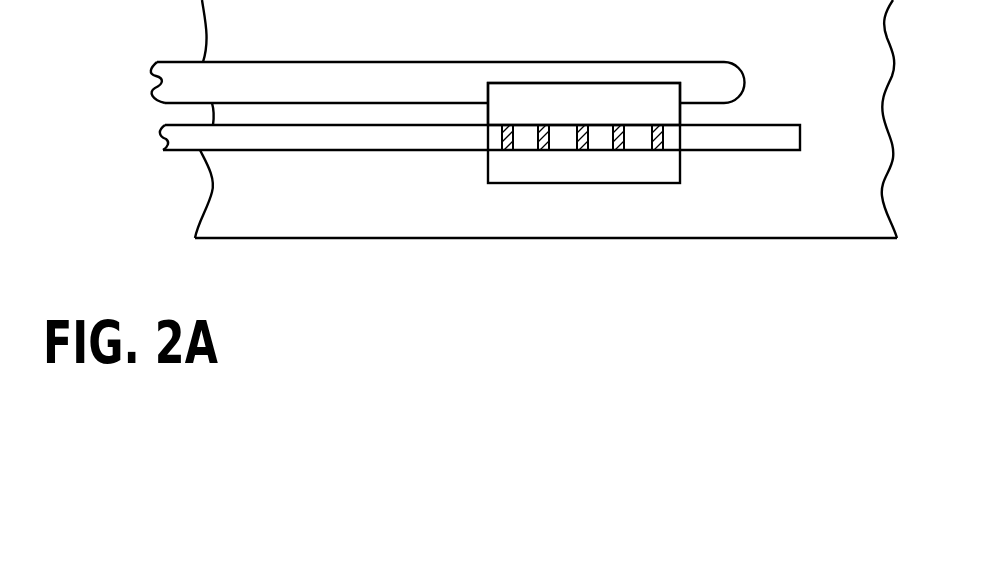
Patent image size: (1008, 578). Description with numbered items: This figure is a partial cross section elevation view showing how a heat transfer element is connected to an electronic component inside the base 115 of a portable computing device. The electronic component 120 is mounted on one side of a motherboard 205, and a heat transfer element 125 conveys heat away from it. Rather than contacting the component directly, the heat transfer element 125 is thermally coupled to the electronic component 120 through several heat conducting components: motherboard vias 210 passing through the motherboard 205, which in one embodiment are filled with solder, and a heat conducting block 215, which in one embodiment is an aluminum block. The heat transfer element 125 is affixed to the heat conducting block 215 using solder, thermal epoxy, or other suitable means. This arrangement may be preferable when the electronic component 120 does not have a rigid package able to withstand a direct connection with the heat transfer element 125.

The base 115 is at (539, 250).
The electronic component 120 is at (664, 189).
The heat transfer element 125 is at (360, 94).
The motherboard 205 is at (808, 138).
The motherboard vias 210 is at (665, 137).
The heat conducting block 215 is at (628, 116).